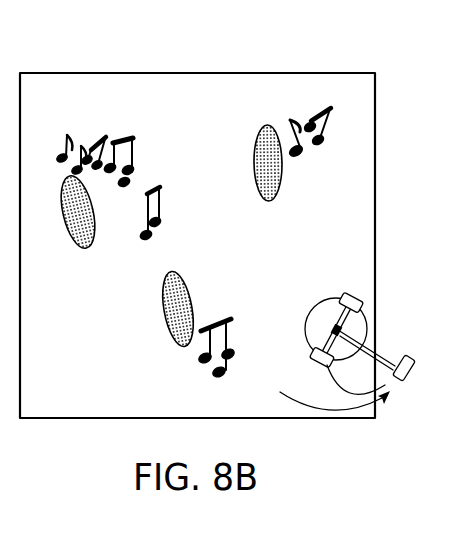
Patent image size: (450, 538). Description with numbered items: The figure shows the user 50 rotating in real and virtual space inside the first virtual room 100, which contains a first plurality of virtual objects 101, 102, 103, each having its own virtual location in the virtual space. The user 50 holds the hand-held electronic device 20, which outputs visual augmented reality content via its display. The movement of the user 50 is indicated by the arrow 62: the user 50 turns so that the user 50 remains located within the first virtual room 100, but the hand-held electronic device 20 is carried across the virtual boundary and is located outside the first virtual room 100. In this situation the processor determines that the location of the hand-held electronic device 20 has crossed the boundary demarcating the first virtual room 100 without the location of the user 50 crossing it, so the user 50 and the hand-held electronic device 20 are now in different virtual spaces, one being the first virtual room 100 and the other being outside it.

The first virtual room 100 is at (268, 96).
The virtual object 101 is at (87, 250).
The virtual object 102 is at (173, 337).
The virtual object 103 is at (267, 203).
The user 50 is at (324, 292).
The hand-held electronic device 20 is at (400, 353).
The arrow 62 is at (305, 410).